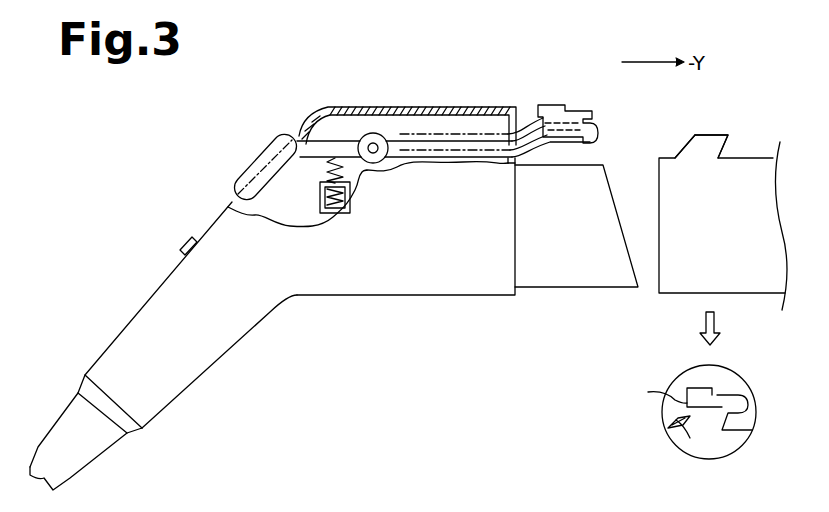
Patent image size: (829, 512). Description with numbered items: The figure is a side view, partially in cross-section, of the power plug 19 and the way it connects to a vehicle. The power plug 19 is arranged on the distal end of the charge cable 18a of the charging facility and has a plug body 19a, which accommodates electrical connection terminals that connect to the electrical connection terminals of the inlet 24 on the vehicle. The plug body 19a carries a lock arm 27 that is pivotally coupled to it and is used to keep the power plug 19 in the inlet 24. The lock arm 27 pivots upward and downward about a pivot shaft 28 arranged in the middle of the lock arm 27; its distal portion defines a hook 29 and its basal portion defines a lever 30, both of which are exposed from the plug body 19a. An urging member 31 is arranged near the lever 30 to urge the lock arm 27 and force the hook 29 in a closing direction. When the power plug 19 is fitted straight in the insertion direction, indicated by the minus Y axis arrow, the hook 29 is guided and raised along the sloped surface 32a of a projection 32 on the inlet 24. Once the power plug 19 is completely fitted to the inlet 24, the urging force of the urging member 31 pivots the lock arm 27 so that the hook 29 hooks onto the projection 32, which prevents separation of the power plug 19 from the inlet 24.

The charge cable 18a is at (58, 487).
The power plug 19 is at (447, 297).
The plug body 19a is at (350, 296).
The inlet 24 is at (672, 294).
The lock arm 27 is at (473, 135).
The pivot shaft 28 is at (373, 143).
The hook 29 is at (598, 132).
The lever 30 is at (262, 152).
The urging member 31 is at (358, 191).
The projection 32 is at (718, 138).
The sloped surface 32a is at (690, 138).